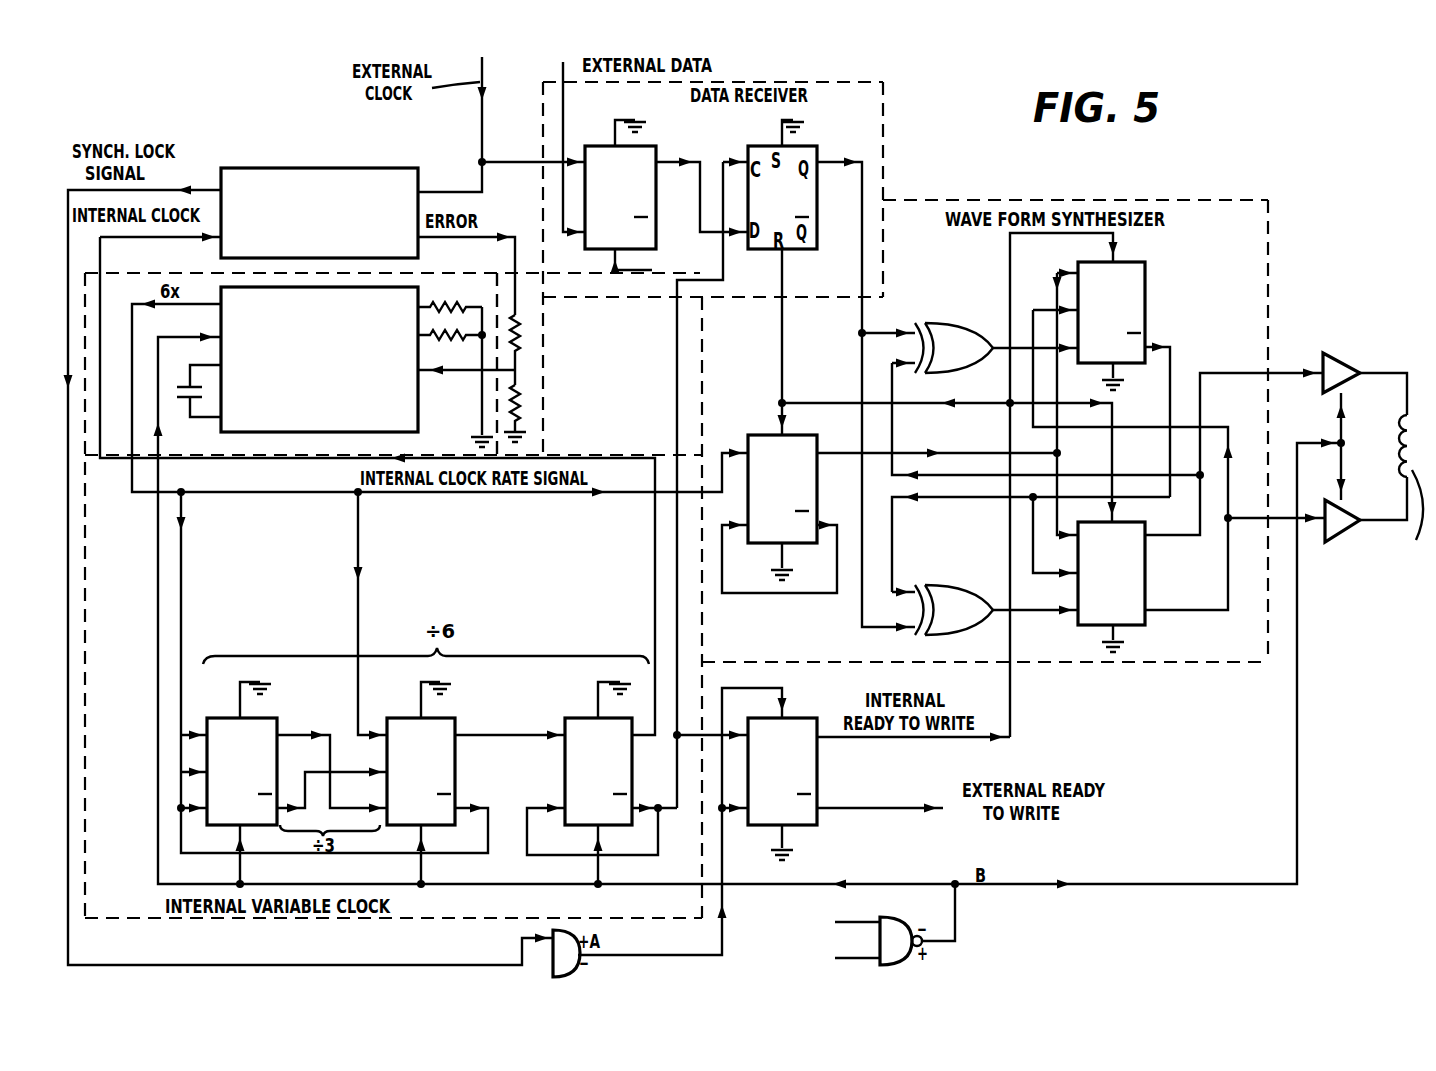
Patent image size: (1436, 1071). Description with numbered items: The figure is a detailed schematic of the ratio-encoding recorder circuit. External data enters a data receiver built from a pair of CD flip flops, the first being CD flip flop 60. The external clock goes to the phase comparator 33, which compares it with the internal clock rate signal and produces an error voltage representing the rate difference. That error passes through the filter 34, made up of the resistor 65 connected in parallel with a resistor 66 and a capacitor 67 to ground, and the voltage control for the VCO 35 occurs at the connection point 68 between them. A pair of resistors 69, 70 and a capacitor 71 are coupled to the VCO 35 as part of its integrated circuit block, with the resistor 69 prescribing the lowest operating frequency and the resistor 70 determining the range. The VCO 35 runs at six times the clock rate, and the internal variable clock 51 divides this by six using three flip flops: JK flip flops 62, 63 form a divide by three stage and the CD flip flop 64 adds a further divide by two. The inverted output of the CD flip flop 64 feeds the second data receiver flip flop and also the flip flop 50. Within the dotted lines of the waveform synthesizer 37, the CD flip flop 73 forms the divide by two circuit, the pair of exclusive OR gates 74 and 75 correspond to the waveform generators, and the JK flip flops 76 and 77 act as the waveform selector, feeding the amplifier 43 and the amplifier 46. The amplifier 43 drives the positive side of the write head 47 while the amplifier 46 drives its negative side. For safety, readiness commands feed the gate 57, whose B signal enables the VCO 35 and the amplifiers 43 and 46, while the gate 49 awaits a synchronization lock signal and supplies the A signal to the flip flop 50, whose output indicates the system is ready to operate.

The phase comparator 33 is at (348, 166).
The filter 34 is at (545, 355).
The VCO 35 is at (418, 412).
The waveform synthesizer 37 is at (992, 200).
The amplifier 43 is at (1343, 361).
The amplifier 46 is at (1343, 547).
The write head 47 is at (1411, 433).
The gate 49 is at (553, 959).
The flip flop 50 is at (818, 782).
The internal variable clock 51 is at (140, 918).
The gate 57 is at (885, 915).
The CD flip flop 60 is at (645, 148).
The JK flip flop 62 is at (272, 717).
The JK flip flop 63 is at (448, 717).
The CD flip flop 64 is at (580, 717).
The resistor 65 is at (520, 317).
The resistor 66 is at (520, 392).
The capacitor 67 is at (522, 432).
The connection point 68 is at (458, 383).
The resistor 69 is at (451, 307).
The resistor 70 is at (446, 336).
The capacitor 71 is at (177, 390).
The CD flip flop 73 is at (770, 434).
The exclusive OR gate 74 is at (971, 322).
The exclusive OR gate 75 is at (967, 584).
The JK flip flop 76 is at (1148, 307).
The JK flip flop 77 is at (1148, 577).